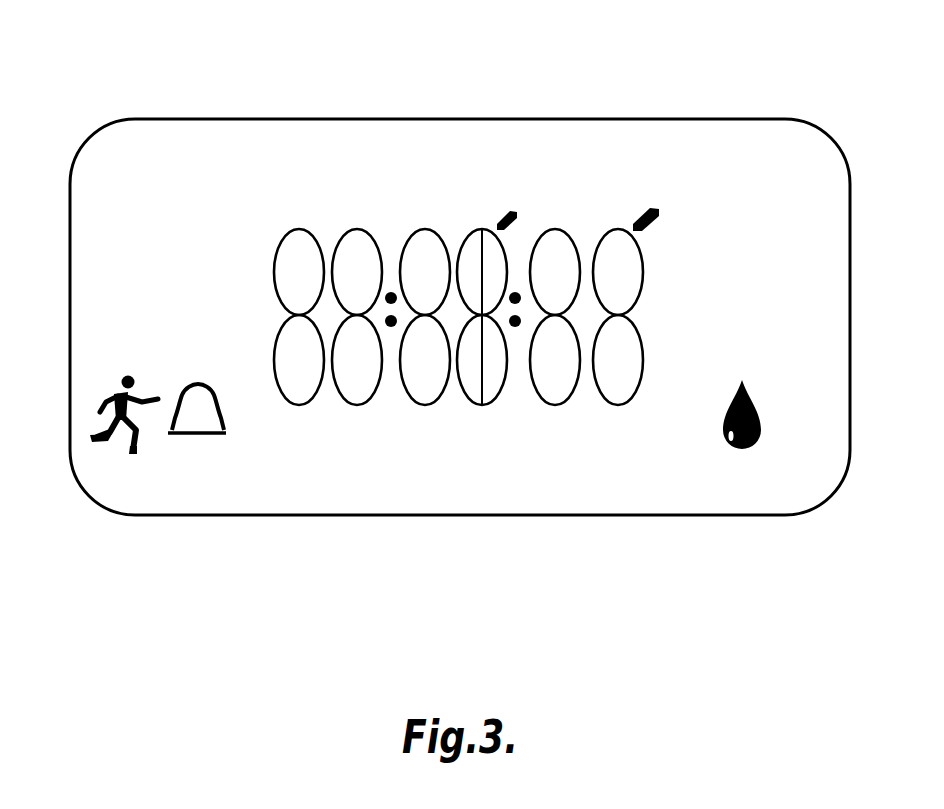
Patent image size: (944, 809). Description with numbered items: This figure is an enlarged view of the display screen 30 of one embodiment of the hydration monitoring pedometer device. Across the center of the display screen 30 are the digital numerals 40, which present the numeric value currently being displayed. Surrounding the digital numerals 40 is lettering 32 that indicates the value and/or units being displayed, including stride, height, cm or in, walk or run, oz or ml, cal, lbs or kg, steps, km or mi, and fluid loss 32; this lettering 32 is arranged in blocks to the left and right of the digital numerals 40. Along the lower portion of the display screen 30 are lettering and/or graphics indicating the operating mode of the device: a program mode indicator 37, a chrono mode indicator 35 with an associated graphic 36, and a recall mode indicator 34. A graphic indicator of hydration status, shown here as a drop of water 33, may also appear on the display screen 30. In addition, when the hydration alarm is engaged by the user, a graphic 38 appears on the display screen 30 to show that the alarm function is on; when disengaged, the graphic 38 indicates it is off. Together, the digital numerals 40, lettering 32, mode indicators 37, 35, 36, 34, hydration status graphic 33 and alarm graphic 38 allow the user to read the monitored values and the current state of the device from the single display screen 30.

The display screen 30 is at (227, 110).
The lettering 32 is at (111, 275).
The hydration status graphic 33 is at (740, 455).
The recall mode indicator 34 is at (582, 457).
The chrono mode indicator 35 is at (472, 457).
The chrono mode graphic 36 is at (118, 440).
The program mode indicator 37 is at (323, 457).
The alarm on/off graphic 38 is at (203, 432).
The digital numerals 40 is at (360, 232).